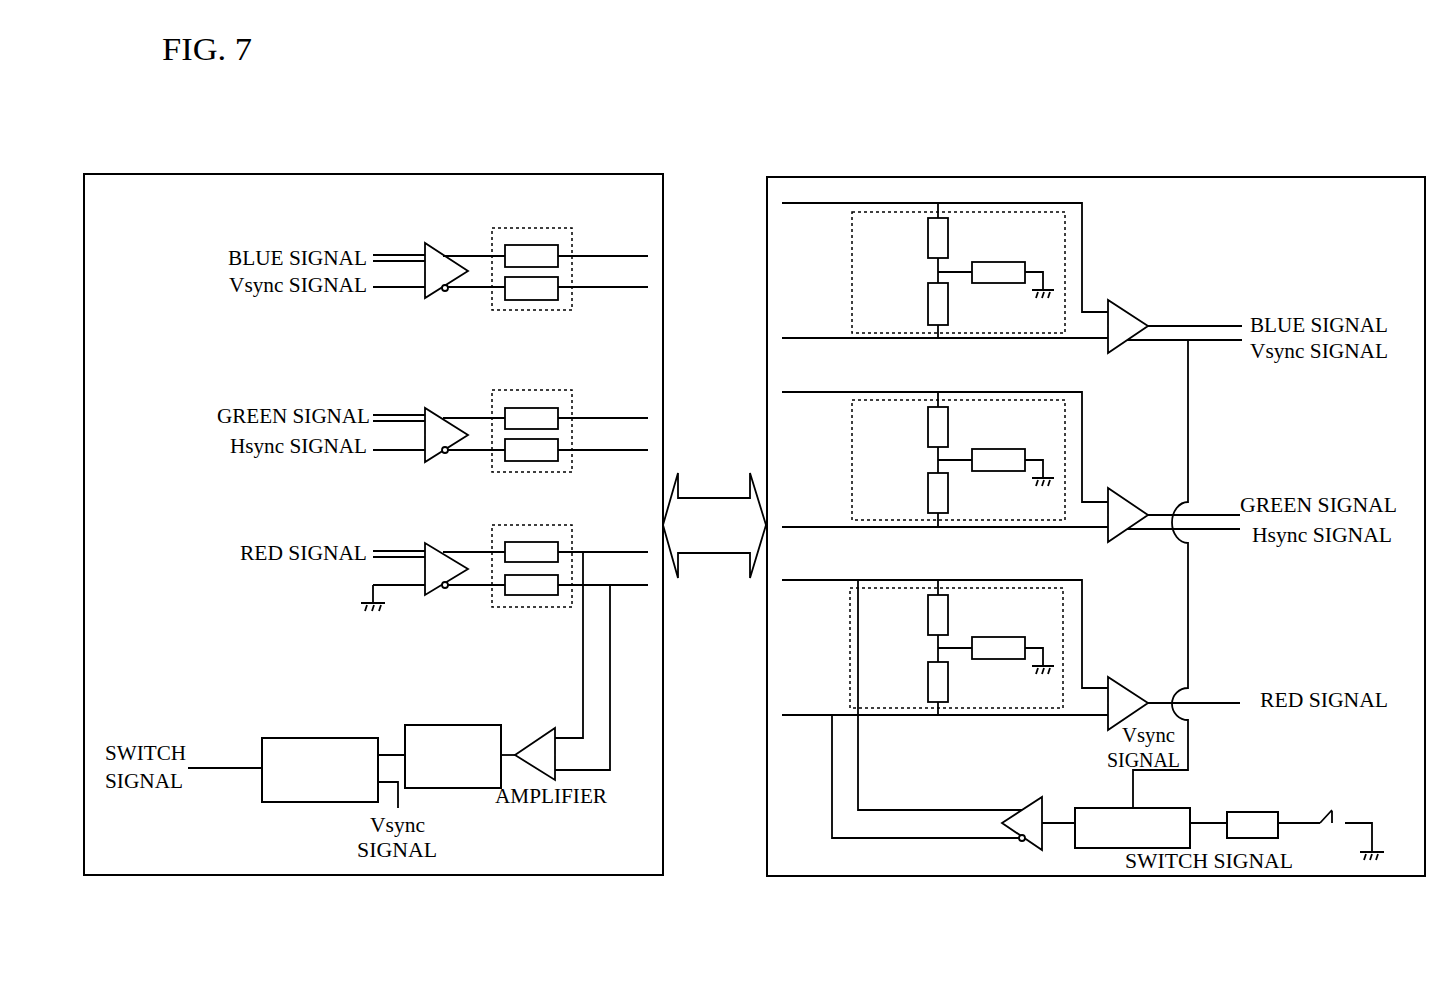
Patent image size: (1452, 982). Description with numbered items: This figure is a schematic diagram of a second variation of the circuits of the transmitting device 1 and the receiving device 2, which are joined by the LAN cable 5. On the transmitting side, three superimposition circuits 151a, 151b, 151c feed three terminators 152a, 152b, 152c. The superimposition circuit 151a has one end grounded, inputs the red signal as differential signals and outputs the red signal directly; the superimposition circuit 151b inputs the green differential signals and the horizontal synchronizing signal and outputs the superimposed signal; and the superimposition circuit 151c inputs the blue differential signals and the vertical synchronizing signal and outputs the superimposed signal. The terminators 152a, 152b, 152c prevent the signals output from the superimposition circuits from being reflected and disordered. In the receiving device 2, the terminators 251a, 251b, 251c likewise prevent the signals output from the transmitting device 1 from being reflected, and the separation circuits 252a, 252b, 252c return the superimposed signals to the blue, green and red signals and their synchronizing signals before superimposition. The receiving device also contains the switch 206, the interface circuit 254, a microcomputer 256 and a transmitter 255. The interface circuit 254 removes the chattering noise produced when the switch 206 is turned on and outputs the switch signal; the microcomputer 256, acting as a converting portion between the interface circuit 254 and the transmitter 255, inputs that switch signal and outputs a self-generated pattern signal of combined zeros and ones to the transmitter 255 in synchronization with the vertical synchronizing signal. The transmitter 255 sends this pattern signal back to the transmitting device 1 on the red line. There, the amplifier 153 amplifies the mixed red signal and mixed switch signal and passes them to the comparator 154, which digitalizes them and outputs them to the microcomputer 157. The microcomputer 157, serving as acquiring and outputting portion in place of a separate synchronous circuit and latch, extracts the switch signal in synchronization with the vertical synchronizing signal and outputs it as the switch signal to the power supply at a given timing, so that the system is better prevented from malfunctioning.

The transmitting device 1 is at (386, 174).
The receiving device 2 is at (1093, 177).
The LAN cable 5 is at (712, 498).
The superimposition circuit 151a is at (426, 543).
The superimposition circuit 151b is at (426, 408).
The superimposition circuit 151c is at (426, 243).
The terminator 152a is at (531, 525).
The terminator 152b is at (531, 390).
The terminator 152c is at (531, 228).
The amplifier 153 is at (532, 741).
The comparator 154 is at (456, 725).
The microcomputer 157 is at (320, 738).
The terminator 251a is at (850, 650).
The terminator 251b is at (852, 460).
The terminator 251c is at (852, 272).
The separation circuit 252a is at (1108, 679).
The separation circuit 252b is at (1108, 490).
The separation circuit 252c is at (1108, 302).
The interface (I/F) circuit 254 is at (1248, 812).
The transmitter 255 is at (1045, 807).
The microcomputer 256 is at (1158, 808).
The switch 206 is at (1342, 814).